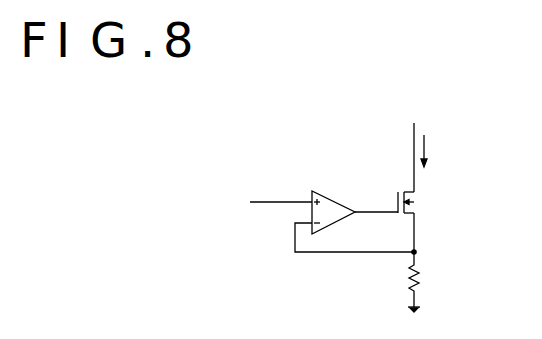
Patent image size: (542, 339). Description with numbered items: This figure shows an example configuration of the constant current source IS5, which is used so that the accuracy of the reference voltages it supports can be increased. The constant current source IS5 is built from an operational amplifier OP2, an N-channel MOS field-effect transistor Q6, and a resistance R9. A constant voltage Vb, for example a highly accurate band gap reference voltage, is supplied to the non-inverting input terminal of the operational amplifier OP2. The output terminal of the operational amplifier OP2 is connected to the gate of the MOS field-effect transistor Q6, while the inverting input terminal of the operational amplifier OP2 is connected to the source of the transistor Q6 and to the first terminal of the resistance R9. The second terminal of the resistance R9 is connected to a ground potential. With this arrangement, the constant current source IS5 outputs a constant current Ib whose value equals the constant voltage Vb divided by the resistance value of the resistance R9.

The operational amplifier OP2 is at (336, 194).
The N-channel MOS field-effect transistor Q6 is at (419, 201).
The resistance R9 is at (406, 279).
The constant current source IS5 is at (501, 122).
The constant current Ib is at (433, 151).
The constant voltage Vb is at (281, 191).